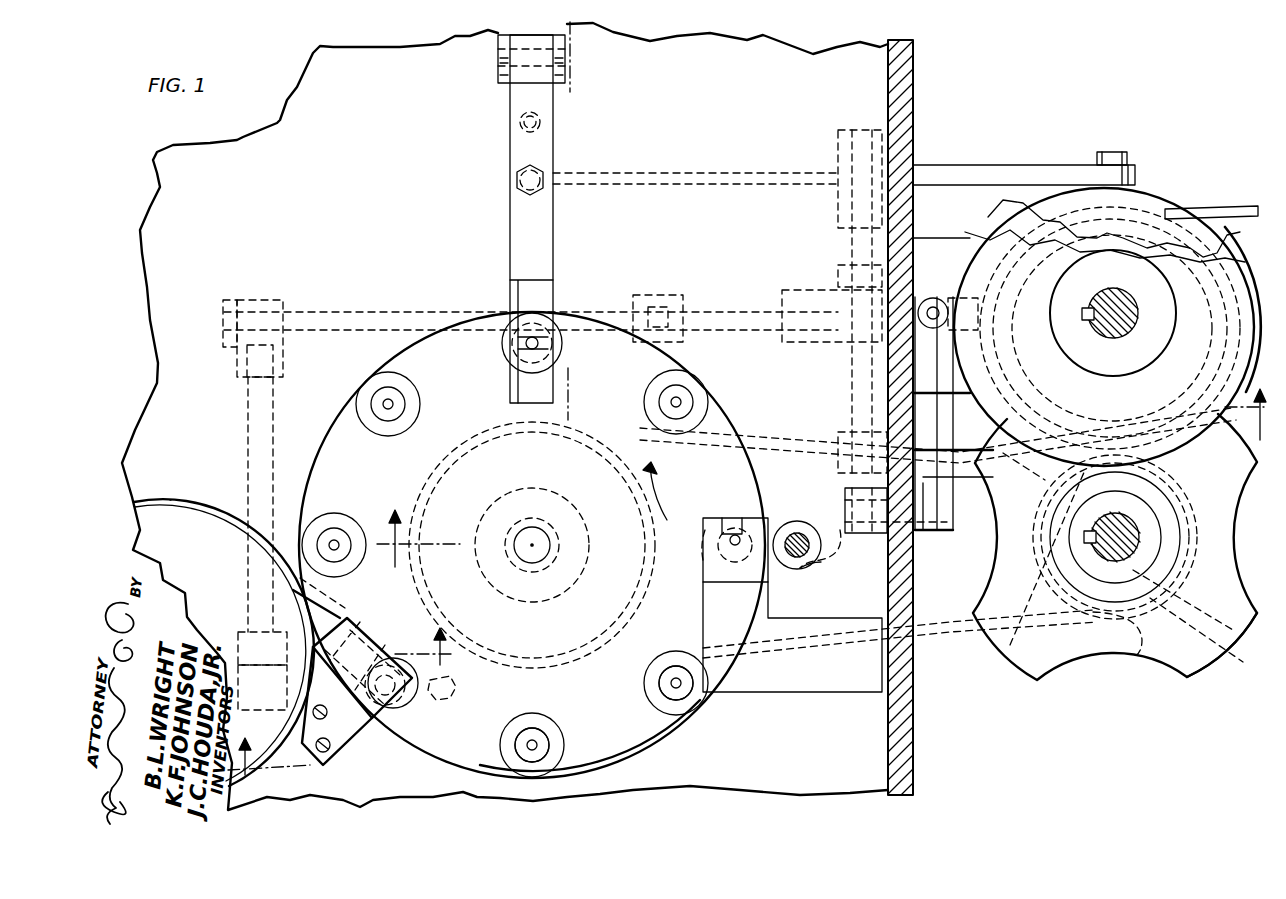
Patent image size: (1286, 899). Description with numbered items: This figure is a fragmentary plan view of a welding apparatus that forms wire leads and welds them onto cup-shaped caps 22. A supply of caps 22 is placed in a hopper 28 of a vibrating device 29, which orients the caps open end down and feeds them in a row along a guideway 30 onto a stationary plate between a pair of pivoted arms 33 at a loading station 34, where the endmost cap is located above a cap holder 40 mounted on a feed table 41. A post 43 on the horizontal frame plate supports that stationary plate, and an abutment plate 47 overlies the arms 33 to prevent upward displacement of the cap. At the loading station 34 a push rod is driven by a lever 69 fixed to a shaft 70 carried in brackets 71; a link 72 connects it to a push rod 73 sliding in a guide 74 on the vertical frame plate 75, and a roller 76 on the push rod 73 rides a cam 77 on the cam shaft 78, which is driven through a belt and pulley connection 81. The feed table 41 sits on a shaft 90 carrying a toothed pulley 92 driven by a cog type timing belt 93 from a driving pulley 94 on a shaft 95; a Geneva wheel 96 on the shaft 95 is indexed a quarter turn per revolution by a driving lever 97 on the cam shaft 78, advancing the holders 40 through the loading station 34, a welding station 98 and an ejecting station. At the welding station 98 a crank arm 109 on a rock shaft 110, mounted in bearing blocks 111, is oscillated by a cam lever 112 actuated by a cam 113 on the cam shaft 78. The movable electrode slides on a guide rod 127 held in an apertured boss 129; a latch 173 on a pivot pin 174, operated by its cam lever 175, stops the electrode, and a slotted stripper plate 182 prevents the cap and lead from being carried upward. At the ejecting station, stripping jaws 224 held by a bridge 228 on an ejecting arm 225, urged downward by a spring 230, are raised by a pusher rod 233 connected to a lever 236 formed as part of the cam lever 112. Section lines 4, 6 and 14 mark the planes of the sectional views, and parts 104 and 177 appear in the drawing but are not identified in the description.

The section line 4- 4 is at (821, 479).
The section line 6- 6 is at (341, 701).
The section line 14- 14 is at (612, 32).
The cap 22 is at (673, 700).
The hopper 28 is at (166, 507).
The vibrating device 29 is at (215, 508).
The guideway 30 is at (350, 604).
The arms 33 is at (375, 642).
The loading station 34 is at (397, 630).
The cap holder 40 is at (372, 416).
The feed table 41 is at (645, 738).
The post 43 is at (333, 755).
The abutment plate 47 is at (362, 722).
The lever 69 is at (300, 710).
The shaft 70 is at (248, 437).
The brackets 71 is at (262, 299).
The link 72 is at (367, 312).
The push rod 73 is at (750, 304).
The guide 74 is at (815, 291).
The vertical frame plate 75 is at (914, 60).
The roller 76 is at (934, 298).
The cam 77 is at (978, 228).
The cam shaft 78 is at (1106, 288).
The belt and pulley connection 81 is at (1215, 207).
The shaft 90 is at (532, 562).
The toothed pulley 92 is at (622, 630).
The cog type timing belt 93 is at (955, 634).
The driving pulley 94 is at (1115, 547).
The shaft 95 is at (1112, 555).
The Geneva wheel 96 is at (1182, 677).
The driving lever 97 is at (1045, 400).
The welding station 98 is at (700, 538).
The support block 104 is at (826, 680).
The crank arm 109 is at (840, 530).
The shaft 110 is at (722, 518).
The bearing blocks 111 is at (838, 208).
The cam lever 112 is at (975, 170).
The cam 113 is at (1165, 198).
The guide rod 127 is at (797, 570).
The apertured boss 129 is at (821, 562).
The latch 173 is at (845, 494).
The pivot pin 174 is at (916, 549).
The cam lever 175 is at (984, 478).
The web 177 is at (990, 222).
The slotted stripper plate 182 is at (710, 565).
The stripping jaws 224 is at (548, 330).
The ejecting arm 225 is at (520, 240).
The bridge 228 is at (510, 302).
The spring 230 is at (520, 122).
The pusher rod 233 is at (515, 180).
The lever 236 is at (705, 172).